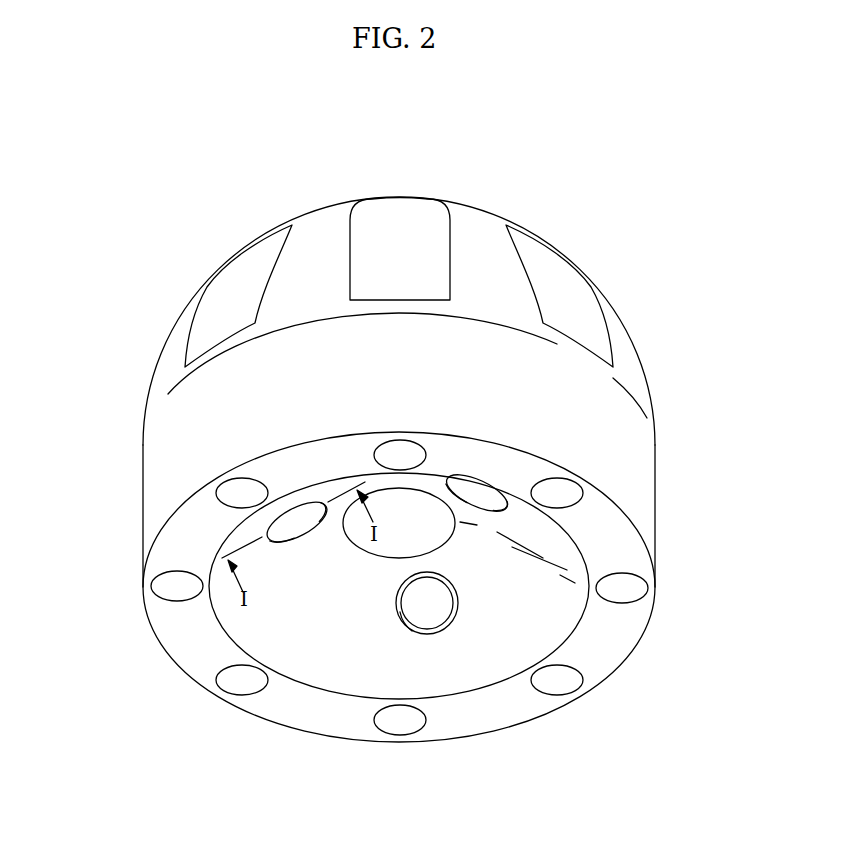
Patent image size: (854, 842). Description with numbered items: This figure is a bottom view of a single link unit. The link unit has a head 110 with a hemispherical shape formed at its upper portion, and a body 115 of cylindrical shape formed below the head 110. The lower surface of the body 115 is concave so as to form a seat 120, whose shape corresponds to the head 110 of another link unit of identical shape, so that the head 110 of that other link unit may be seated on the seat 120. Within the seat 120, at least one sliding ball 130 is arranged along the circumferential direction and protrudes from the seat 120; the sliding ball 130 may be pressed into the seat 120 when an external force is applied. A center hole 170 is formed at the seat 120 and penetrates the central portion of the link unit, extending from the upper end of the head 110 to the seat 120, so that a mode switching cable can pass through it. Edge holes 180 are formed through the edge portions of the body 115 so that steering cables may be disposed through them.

The head 110 is at (477, 228).
The body 115 is at (158, 482).
The seat 120 is at (553, 600).
The sliding ball 130 is at (448, 603).
The center hole 170 is at (437, 520).
The edge holes 180 is at (566, 500).